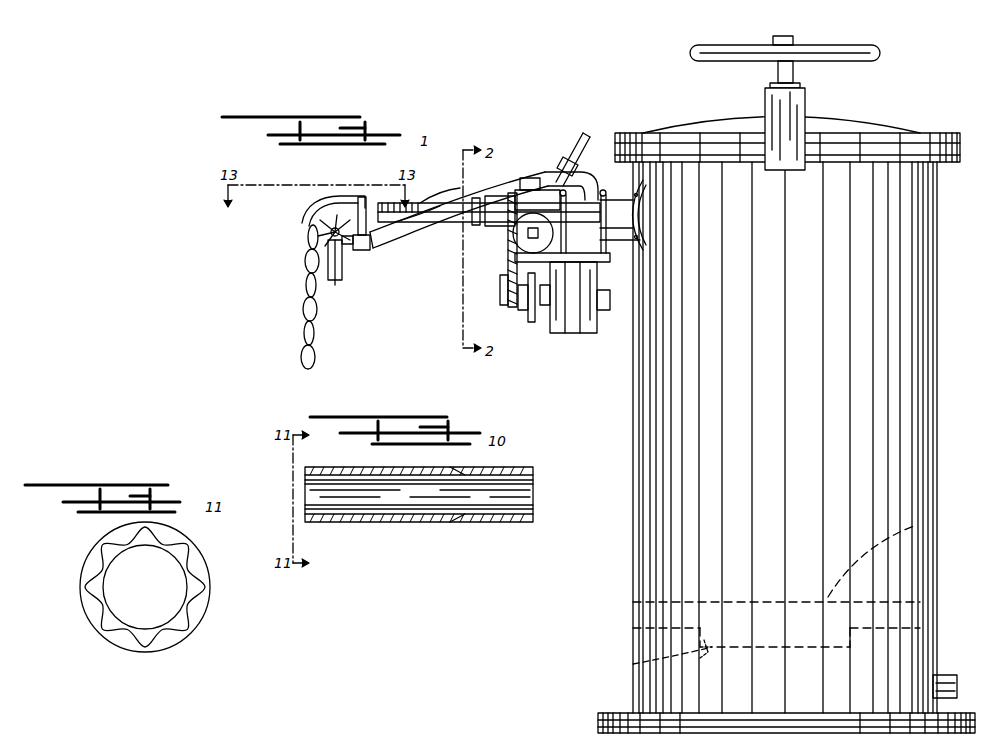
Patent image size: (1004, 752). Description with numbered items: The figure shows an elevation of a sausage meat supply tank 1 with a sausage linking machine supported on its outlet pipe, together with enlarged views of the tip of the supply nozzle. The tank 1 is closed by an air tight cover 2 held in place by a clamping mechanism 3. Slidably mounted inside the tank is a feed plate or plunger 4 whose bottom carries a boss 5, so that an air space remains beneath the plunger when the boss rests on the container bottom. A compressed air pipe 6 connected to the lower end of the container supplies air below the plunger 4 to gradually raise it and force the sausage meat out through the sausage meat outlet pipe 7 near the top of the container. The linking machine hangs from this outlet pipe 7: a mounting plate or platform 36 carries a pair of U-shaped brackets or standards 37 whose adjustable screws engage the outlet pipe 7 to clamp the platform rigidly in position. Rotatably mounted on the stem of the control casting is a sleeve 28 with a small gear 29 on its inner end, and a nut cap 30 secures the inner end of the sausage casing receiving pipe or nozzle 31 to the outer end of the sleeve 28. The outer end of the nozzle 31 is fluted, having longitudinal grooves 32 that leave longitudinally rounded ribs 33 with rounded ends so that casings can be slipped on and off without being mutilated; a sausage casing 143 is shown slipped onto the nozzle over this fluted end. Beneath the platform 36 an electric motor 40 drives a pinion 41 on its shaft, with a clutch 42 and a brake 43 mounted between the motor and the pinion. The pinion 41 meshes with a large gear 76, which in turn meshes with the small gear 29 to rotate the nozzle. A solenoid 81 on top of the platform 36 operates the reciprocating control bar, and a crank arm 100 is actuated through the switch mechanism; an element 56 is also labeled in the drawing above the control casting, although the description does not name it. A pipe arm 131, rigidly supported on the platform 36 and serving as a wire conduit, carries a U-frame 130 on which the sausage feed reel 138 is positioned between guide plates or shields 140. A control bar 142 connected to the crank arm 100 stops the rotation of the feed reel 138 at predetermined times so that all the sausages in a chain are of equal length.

In FIG. 1, the sausage meat supply tank 1 is at (912, 423).
In FIG. 1, the air tight cover 2 is at (858, 124).
In FIG. 1, the clamping mechanism 3 is at (868, 52).
In FIG. 1, the feed plate or plunger 4 is at (945, 522).
In FIG. 1, the boss 5 is at (633, 664).
In FIG. 1, the compressed air pipe 6 is at (955, 672).
In FIG. 1, the sausage meat outlet pipe 7 is at (645, 213).
In FIG. 1, the sleeve 28 is at (493, 212).
In FIG. 1, the small gear 29 is at (472, 228).
In FIG. 1, the nut cap 30 is at (422, 222).
In FIG. 1, the sausage casing receiving pipe or nozzle 31 is at (462, 205).
In FIG. 10, the sausage casing receiving pipe or nozzle 31 is at (500, 522).
In FIG. 11, the sausage casing receiving pipe or nozzle 31 is at (108, 597).
In FIG. 10, the longitudinal grooves 32 is at (400, 522).
In FIG. 11, the longitudinal grooves 32 is at (145, 650).
In FIG. 10, the longitudinally rounded ribs 33 is at (358, 522).
In FIG. 11, the longitudinally rounded ribs 33 is at (83, 575).
In FIG. 1, the mounting plate or platform 36 is at (610, 268).
In FIG. 1, the U-shaped brackets or standards 37 is at (640, 243).
In FIG. 1, the electric motor 40 is at (585, 333).
In FIG. 1, the pinion 41 is at (505, 305).
In FIG. 1, the clutch 42 is at (533, 322).
In FIG. 1, the brake 43 is at (523, 310).
In FIG. 1, the gauge 56 is at (575, 160).
In FIG. 1, the large gear 76 is at (508, 300).
In FIG. 1, the solenoid 81 is at (520, 258).
In FIG. 1, the crank arm 100 is at (527, 240).
In FIG. 1, the U-frame 130 is at (342, 262).
In FIG. 1, the pipe arm 131 is at (378, 250).
In FIG. 1, the sausage feed reel 138 is at (318, 238).
In FIG. 1, the guide plates or shields 140 is at (348, 192).
In FIG. 1, the control bar 142 is at (393, 240).
In FIG. 1, the sausage casing 143 is at (418, 195).